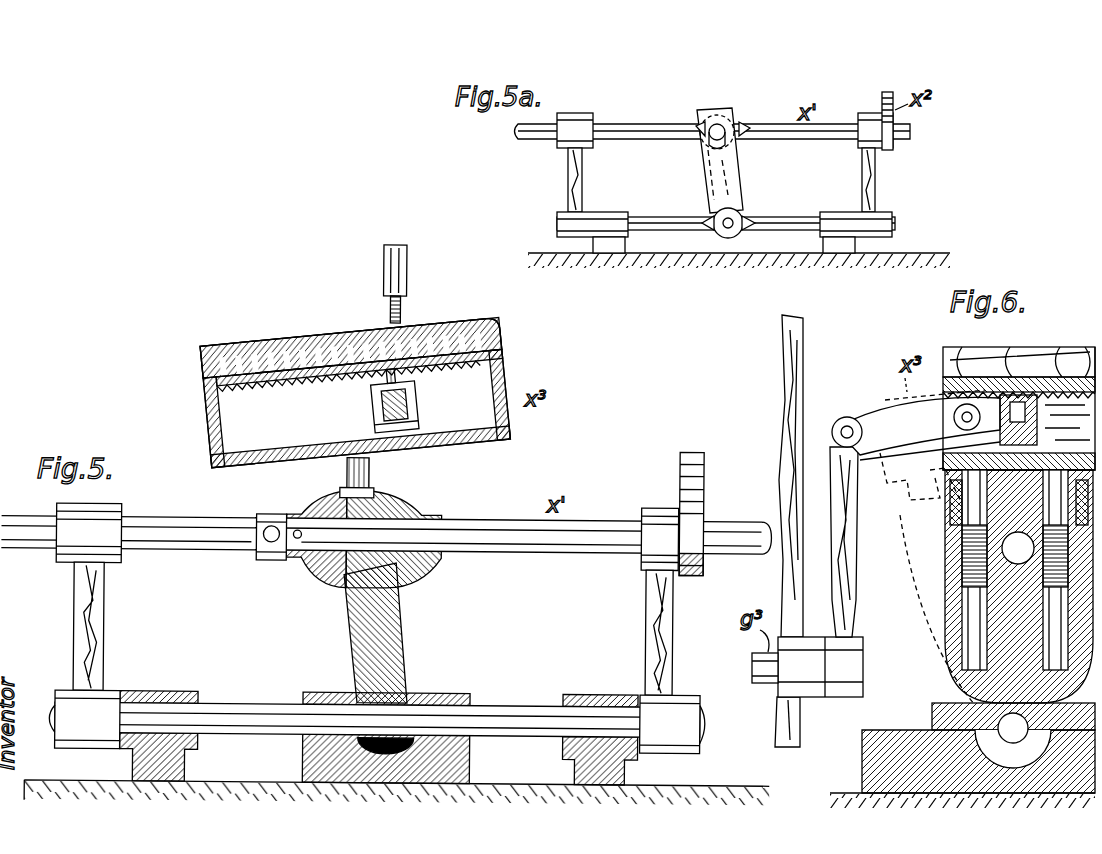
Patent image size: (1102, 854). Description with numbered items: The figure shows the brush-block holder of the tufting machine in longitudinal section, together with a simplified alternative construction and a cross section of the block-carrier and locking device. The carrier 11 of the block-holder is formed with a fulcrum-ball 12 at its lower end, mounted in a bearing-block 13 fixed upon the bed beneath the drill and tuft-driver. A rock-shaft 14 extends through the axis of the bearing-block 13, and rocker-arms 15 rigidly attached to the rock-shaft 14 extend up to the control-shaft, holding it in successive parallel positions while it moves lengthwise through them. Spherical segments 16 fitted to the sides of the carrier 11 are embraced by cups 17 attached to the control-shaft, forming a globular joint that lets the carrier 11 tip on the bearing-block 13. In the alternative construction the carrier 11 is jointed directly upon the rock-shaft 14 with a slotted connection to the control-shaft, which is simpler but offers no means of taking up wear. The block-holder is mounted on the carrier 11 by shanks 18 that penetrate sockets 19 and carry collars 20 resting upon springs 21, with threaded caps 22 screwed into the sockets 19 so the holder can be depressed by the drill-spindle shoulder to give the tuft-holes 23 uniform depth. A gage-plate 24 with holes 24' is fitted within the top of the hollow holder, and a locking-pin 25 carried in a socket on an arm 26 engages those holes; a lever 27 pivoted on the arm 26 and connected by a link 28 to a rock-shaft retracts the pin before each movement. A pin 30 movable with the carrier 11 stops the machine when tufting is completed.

In FIG. 5, the carrier 11 is at (357, 632).
In FIG. 5A, the carrier 11 is at (726, 184).
In FIG. 6, the carrier 11 is at (945, 630).
In FIG. 5, the fulcrum-ball 12 is at (388, 748).
In FIG. 6, the fulcrum-ball 12 is at (1005, 757).
In FIG. 5, the bearing-block 13 is at (316, 756).
In FIG. 6, the bearing-block 13 is at (932, 720).
In FIG. 5, the rock-shaft 14 is at (249, 714).
In FIG. 5A, the rock-shaft 14 is at (659, 224).
In FIG. 5, the rocker-arms 15 is at (648, 622).
In FIG. 5A, the rocker-arms 15 is at (568, 184).
In FIG. 5, the spherical segments 16 is at (405, 578).
In FIG. 5, the cups 17 is at (316, 566).
In FIG. 5, the shanks 18 is at (372, 468).
In FIG. 6, the sockets 19 is at (966, 556).
In FIG. 6, the collars 20 is at (960, 522).
In FIG. 6, the springs 21 is at (960, 572).
In FIG. 6, the threaded caps 22 is at (1019, 422).
In FIG. 5, the tuft-holes 23 is at (287, 339).
In FIG. 5, the gage-plate 24 is at (380, 365).
In FIG. 6, the gage-plate 24 is at (1019, 387).
In FIG. 5, the holes 24' is at (349, 397).
In FIG. 5, the locking-pin 25 is at (392, 375).
In FIG. 5, the arm 26 is at (368, 402).
In FIG. 6, the arm 26 is at (848, 412).
In FIG. 5, the lever 27 is at (412, 413).
In FIG. 6, the lever 27 is at (925, 441).
In FIG. 6, the link 28 is at (860, 556).
In FIG. 5, the pin 30 is at (266, 524).